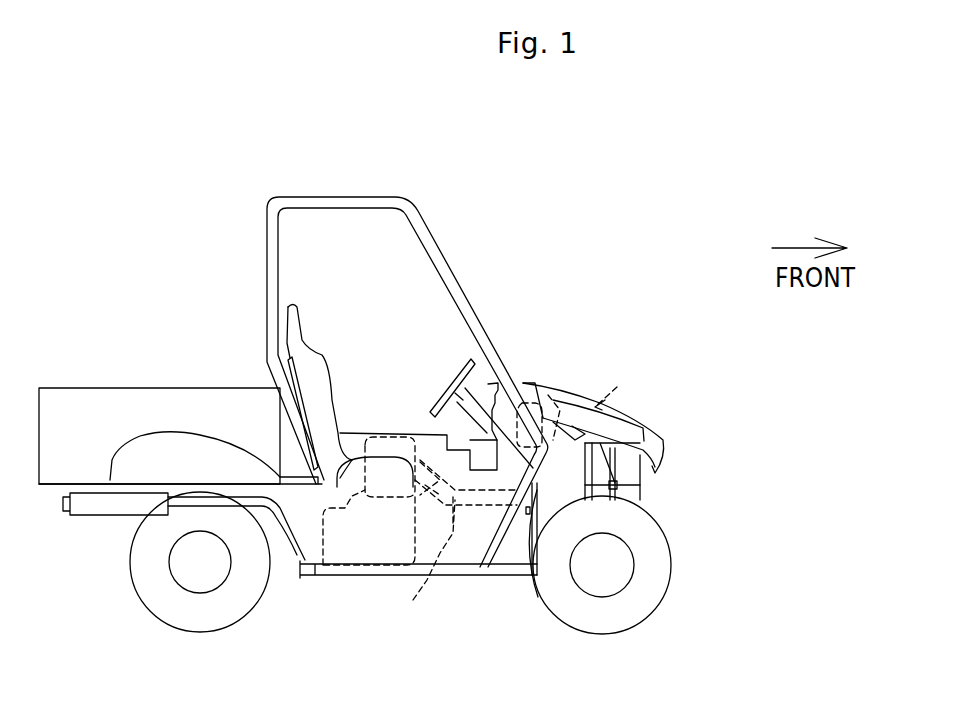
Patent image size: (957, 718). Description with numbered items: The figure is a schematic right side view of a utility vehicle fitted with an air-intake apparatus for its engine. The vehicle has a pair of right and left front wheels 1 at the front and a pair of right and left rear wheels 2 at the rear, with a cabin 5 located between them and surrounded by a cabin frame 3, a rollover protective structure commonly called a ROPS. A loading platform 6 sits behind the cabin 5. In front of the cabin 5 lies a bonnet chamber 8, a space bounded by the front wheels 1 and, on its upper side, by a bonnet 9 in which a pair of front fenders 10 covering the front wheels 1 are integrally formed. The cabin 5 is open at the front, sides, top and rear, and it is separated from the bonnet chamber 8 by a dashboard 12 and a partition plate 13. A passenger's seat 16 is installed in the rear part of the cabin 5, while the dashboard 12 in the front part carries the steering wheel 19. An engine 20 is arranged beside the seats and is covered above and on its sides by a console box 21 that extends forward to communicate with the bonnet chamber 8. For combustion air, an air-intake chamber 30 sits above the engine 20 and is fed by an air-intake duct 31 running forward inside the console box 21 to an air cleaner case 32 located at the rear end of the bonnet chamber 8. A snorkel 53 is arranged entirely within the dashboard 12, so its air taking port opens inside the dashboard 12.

The front wheels 1 is at (640, 595).
The rear wheels 2 is at (165, 602).
The cabin frame 3 is at (273, 230).
The cabin 5 is at (360, 233).
The loading platform 6 is at (122, 398).
The bonnet chamber 8 is at (572, 468).
The bonnet 9 is at (658, 432).
The front fenders 10 is at (660, 445).
The dashboard 12 is at (515, 392).
The partition plate 13 is at (537, 590).
The passenger's seat 16 is at (350, 432).
The steering wheel 19 is at (468, 368).
The engine 20 is at (323, 560).
The console box 21 is at (418, 423).
The air-intake chamber 30 is at (368, 410).
The air-intake duct 31 is at (413, 600).
The air cleaner case 32 is at (617, 387).
The snorkel 53 is at (548, 395).